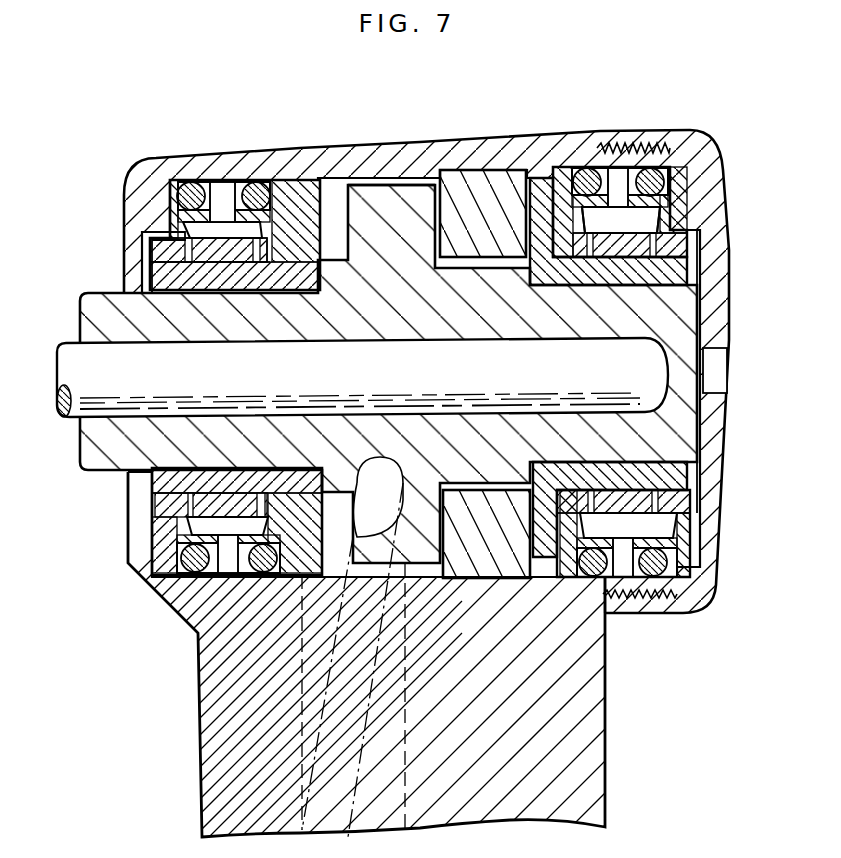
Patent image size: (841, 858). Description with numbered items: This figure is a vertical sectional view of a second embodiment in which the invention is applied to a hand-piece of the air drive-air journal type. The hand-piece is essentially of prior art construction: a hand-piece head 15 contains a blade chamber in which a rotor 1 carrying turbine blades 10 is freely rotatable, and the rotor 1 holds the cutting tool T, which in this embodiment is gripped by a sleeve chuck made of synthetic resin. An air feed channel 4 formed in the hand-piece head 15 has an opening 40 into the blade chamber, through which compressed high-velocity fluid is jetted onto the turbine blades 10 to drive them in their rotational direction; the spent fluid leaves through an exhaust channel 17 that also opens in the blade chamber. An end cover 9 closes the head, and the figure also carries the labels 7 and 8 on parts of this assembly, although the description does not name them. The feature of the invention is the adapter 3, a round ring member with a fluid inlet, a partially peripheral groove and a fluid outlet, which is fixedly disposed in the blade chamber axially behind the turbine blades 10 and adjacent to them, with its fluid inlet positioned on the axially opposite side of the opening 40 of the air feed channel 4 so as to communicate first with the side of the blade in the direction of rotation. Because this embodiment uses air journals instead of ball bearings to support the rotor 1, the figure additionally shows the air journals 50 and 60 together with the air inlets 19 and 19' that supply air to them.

The rotor 1 is at (347, 287).
The adapter 3 is at (473, 187).
The air feed channel 4 is at (325, 707).
The bearing 7 is at (173, 187).
The threads 8 is at (650, 150).
The end cover 9 is at (705, 198).
The turbine blades 10 is at (380, 213).
The hand-piece head 15 is at (585, 732).
The exhaust channel 17 is at (300, 622).
The air inlet 19 is at (420, 319).
The air inlet 19' is at (430, 322).
The opening 40 is at (155, 236).
The air journal 50 is at (182, 230).
The air journal 60 is at (653, 220).
The cutting tool T is at (63, 357).